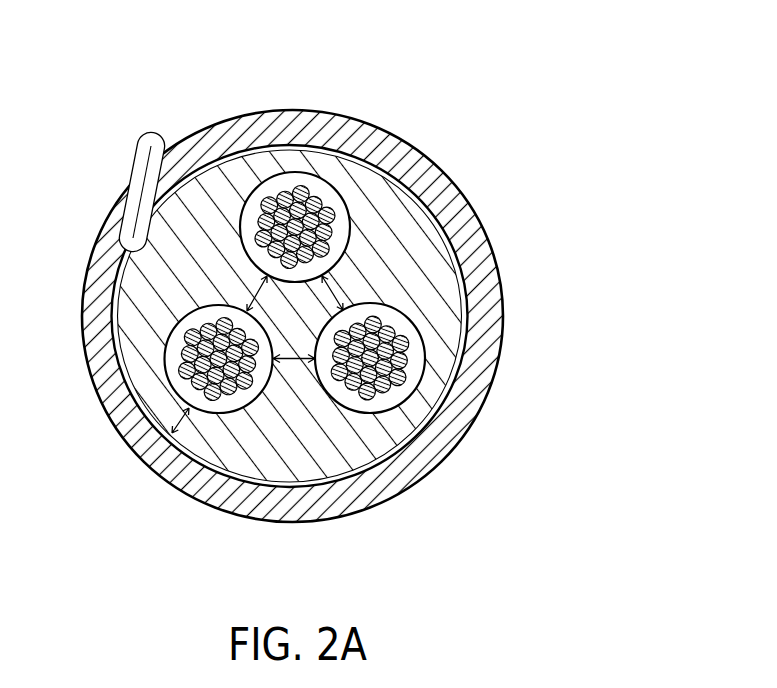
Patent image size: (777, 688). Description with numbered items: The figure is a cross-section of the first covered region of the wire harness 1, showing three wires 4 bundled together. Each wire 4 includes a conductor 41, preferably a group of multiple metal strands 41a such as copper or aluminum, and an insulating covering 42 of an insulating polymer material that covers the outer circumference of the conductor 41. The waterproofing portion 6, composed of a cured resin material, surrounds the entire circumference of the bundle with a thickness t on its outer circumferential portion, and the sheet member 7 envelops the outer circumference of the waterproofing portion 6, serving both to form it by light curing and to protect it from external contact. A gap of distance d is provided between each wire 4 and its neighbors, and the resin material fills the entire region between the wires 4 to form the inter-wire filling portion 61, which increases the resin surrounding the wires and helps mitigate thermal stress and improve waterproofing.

The wire harness 1 is at (330, 306).
The wire 4 is at (312, 174).
The waterproofing portion 6 is at (440, 273).
The sheet member 7 is at (436, 278).
The conductor 41 is at (257, 217).
The strand 41a is at (184, 149).
The insulating covering 42 is at (262, 196).
The inter-wire filling portion 61 is at (296, 350).